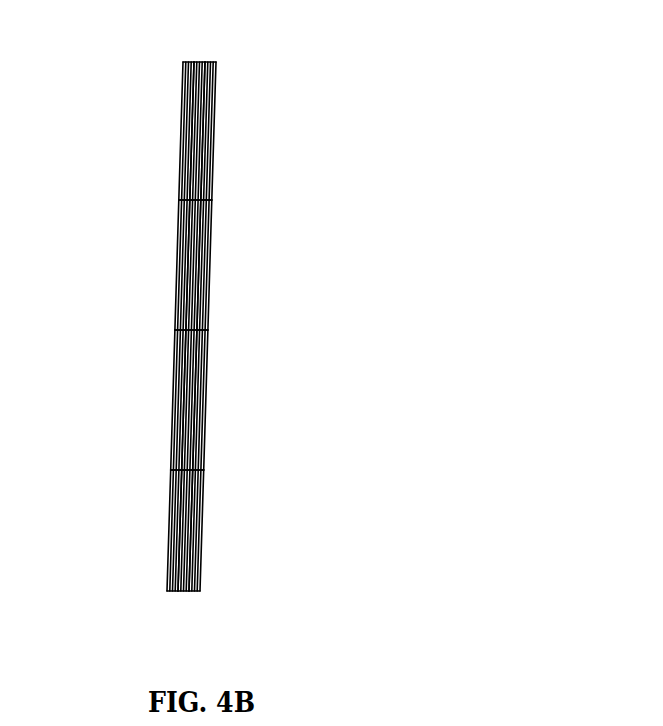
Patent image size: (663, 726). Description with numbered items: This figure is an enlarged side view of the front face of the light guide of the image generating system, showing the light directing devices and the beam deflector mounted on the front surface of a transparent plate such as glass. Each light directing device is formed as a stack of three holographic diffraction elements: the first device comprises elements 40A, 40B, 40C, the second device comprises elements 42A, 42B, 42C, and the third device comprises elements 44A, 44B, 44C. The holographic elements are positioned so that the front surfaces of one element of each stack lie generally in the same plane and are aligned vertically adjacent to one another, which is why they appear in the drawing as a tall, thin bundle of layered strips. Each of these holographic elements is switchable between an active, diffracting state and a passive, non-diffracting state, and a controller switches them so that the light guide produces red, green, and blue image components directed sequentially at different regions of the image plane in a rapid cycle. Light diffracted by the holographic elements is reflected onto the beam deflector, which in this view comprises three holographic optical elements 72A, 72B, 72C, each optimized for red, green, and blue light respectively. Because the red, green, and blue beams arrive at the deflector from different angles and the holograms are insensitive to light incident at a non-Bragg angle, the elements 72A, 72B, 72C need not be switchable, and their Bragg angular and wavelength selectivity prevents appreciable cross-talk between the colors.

The holographic diffraction element 40A is at (183, 97).
The holographic diffraction element 40B is at (200, 62).
The holographic diffraction element 40C is at (215, 105).
The holographic diffraction element 42A is at (180, 233).
The holographic diffraction element 42B is at (192, 217).
The holographic diffraction element 42C is at (208, 264).
The holographic diffraction element 44A is at (182, 372).
The holographic diffraction element 44B is at (190, 360).
The holographic diffraction element 44C is at (202, 416).
The holographic optical element 72A is at (170, 513).
The holographic optical element 72C is at (200, 553).
The holographic optical element 72B is at (182, 590).